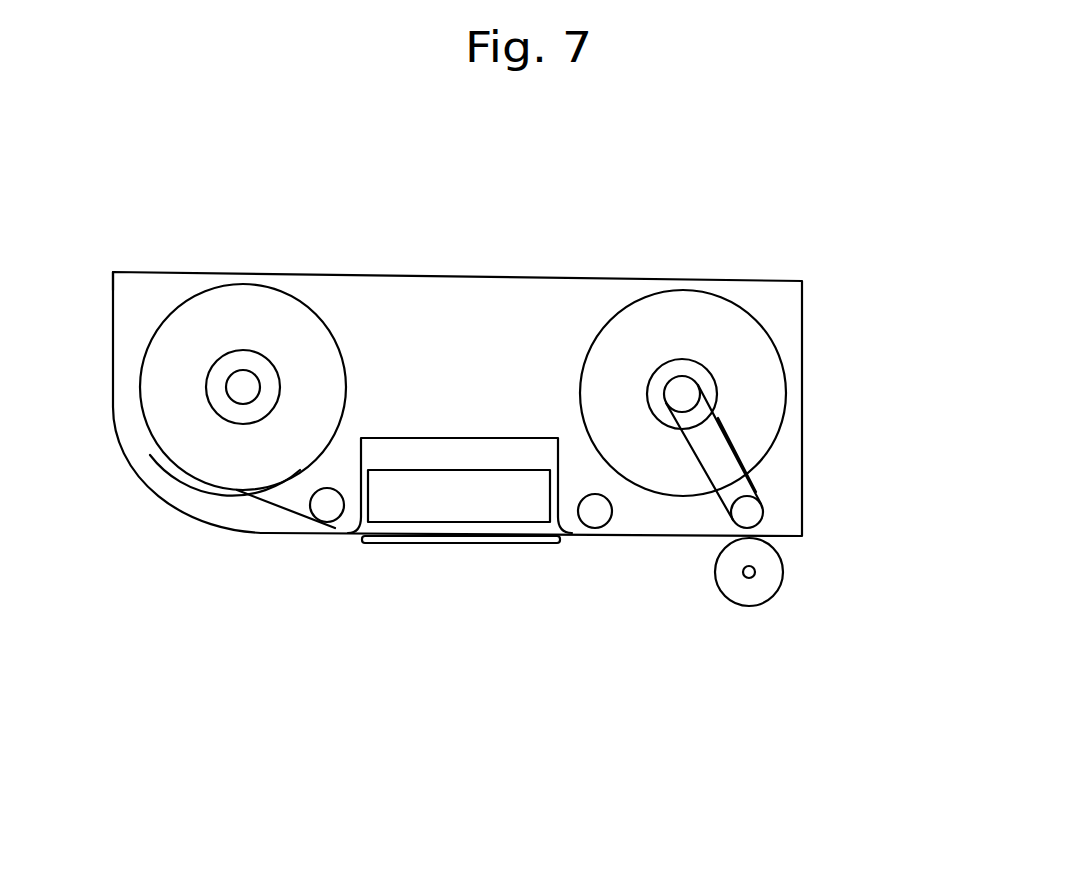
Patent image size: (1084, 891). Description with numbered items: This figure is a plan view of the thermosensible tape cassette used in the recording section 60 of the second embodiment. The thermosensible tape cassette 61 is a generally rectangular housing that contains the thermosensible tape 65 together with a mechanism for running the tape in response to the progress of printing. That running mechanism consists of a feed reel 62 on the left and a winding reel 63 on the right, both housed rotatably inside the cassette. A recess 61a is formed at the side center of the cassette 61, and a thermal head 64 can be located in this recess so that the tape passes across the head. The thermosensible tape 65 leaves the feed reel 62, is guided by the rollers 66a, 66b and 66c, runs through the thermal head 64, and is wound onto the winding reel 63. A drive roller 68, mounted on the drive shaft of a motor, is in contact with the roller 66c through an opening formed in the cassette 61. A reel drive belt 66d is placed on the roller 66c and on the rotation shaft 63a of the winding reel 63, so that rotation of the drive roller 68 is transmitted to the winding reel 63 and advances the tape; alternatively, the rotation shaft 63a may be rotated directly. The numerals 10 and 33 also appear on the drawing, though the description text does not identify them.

The print tape 10 is at (530, 543).
The cassette receiving portion 33 is at (108, 243).
The recording section 60 is at (642, 152).
The thermosensible tape cassette 61 is at (188, 277).
The recess 61a is at (372, 448).
The feed reel 62 is at (188, 458).
The winding reel 63 is at (757, 355).
The rotation shaft 63a is at (683, 378).
The thermal head 64 is at (468, 513).
The thermosensible tape 65 is at (247, 500).
The roller 66a is at (327, 513).
The roller 66b is at (605, 517).
The roller 66c is at (749, 512).
The reel drive belt 66d is at (722, 420).
The drive roller 68 is at (745, 597).